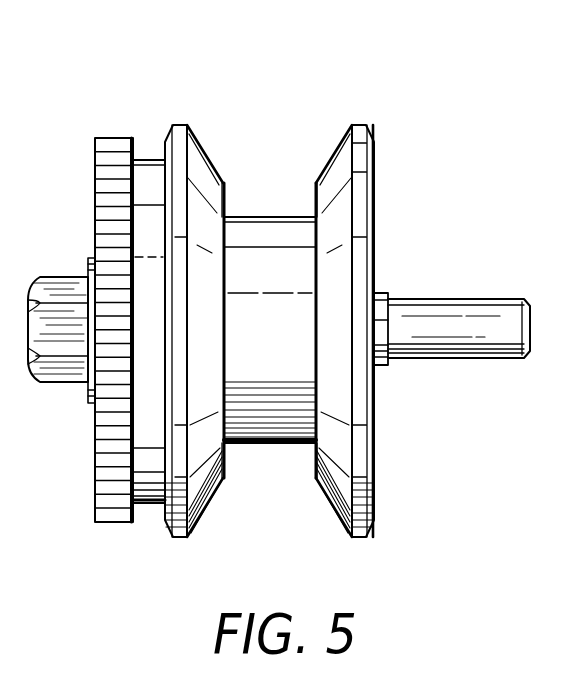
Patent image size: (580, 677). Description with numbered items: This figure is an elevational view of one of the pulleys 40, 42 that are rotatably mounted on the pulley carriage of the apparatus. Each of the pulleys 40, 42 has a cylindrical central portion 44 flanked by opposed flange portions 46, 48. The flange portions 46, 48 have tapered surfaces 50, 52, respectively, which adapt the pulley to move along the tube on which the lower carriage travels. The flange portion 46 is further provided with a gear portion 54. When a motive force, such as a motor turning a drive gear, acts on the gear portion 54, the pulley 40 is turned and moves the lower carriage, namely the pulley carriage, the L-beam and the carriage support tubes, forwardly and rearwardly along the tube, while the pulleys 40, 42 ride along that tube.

The pulley 40 is at (328, 84).
The pulley 42 is at (279, 330).
The cylindrical central portion 44 is at (253, 220).
The flange portion 46 is at (170, 124).
The flange portion 48 is at (373, 134).
The tapered surface 50 is at (205, 157).
The tapered surface 52 is at (333, 153).
The gear portion 54 is at (115, 438).